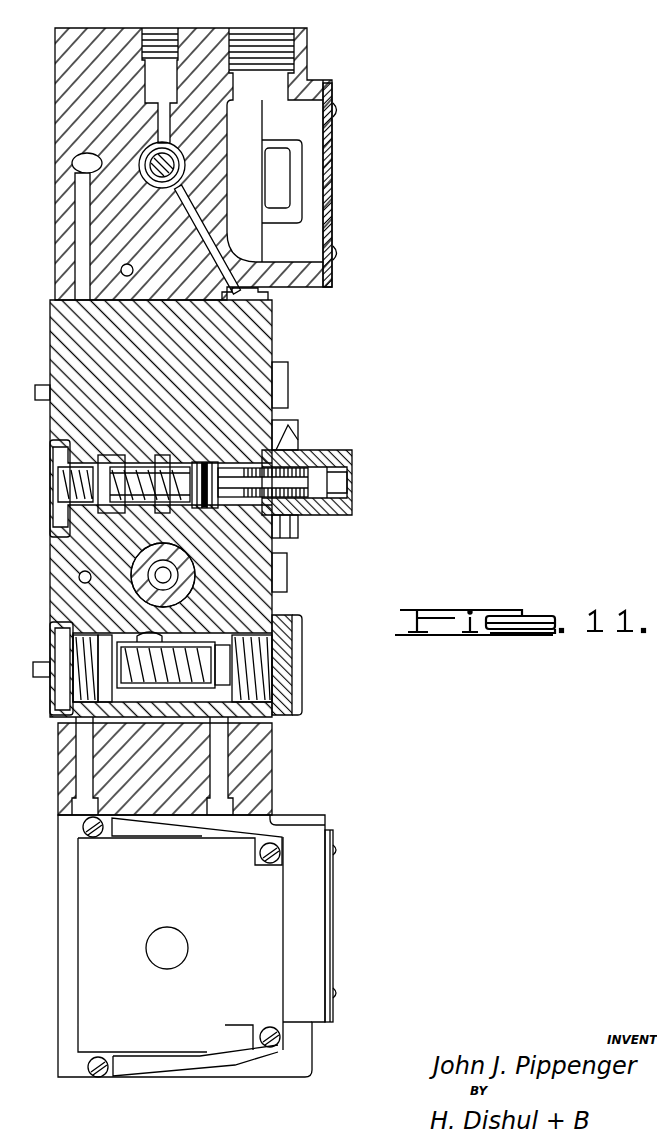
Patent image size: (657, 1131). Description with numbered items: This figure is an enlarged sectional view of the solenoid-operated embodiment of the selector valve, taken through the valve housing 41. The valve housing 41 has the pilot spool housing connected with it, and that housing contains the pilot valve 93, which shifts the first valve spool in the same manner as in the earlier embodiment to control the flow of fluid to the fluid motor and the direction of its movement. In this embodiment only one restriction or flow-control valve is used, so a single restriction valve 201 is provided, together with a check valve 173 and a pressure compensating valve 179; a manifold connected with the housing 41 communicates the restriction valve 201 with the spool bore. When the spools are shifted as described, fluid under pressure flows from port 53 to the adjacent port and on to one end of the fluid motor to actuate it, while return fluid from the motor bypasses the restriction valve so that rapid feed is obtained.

The pilot valve 93 is at (148, 158).
The restriction valve 201 is at (182, 460).
The check valve 173 is at (193, 560).
The pressure compensating valve 179 is at (177, 637).
The valve housing 41 is at (273, 763).
The port 53 is at (305, 900).